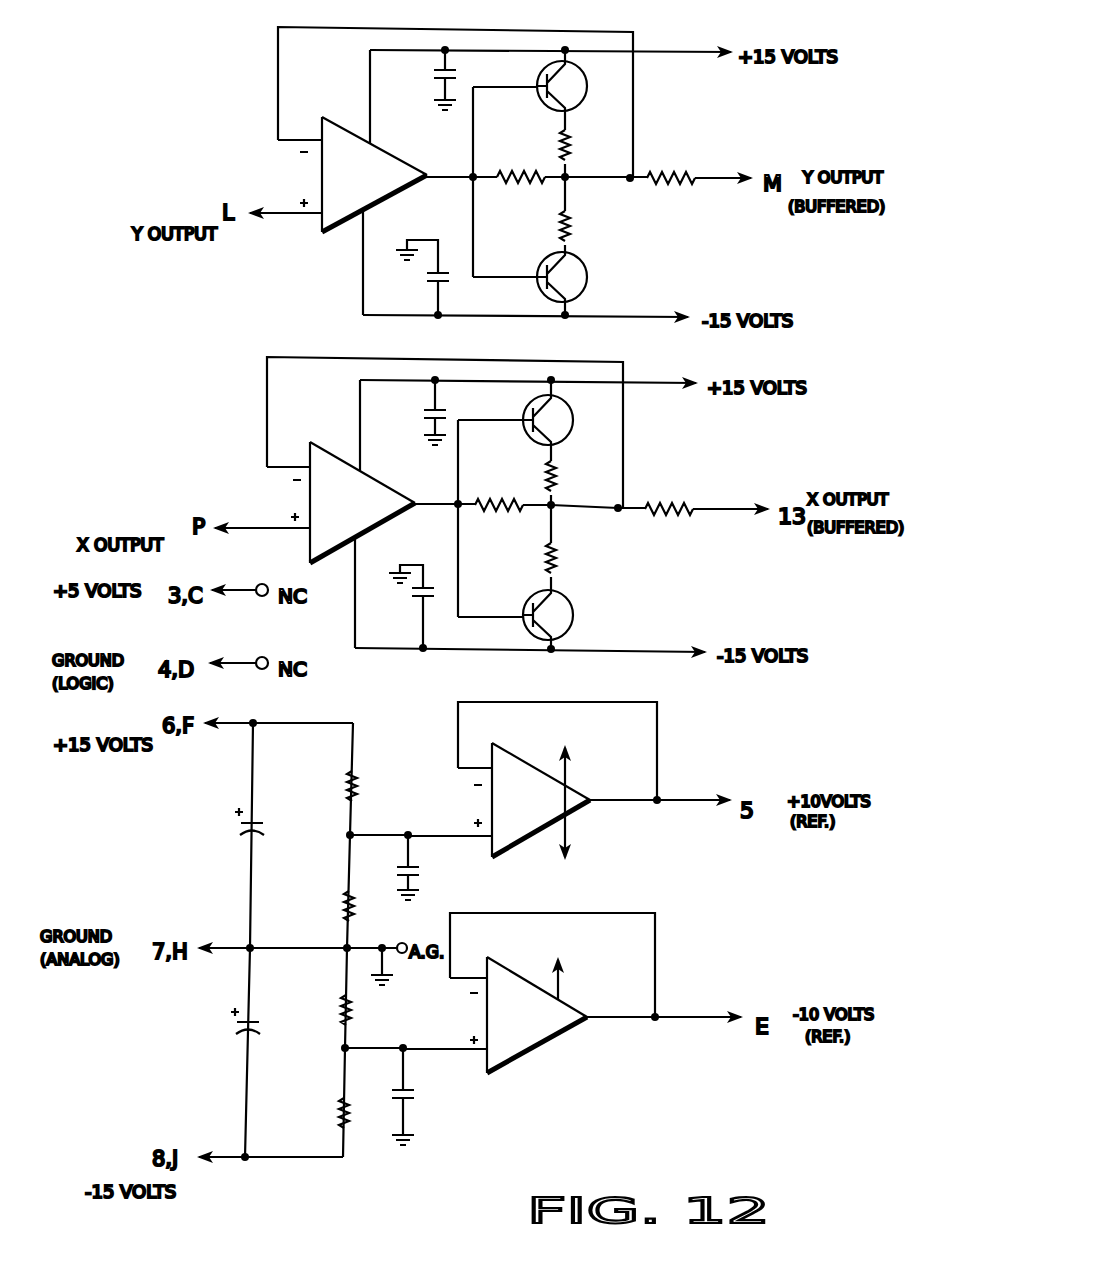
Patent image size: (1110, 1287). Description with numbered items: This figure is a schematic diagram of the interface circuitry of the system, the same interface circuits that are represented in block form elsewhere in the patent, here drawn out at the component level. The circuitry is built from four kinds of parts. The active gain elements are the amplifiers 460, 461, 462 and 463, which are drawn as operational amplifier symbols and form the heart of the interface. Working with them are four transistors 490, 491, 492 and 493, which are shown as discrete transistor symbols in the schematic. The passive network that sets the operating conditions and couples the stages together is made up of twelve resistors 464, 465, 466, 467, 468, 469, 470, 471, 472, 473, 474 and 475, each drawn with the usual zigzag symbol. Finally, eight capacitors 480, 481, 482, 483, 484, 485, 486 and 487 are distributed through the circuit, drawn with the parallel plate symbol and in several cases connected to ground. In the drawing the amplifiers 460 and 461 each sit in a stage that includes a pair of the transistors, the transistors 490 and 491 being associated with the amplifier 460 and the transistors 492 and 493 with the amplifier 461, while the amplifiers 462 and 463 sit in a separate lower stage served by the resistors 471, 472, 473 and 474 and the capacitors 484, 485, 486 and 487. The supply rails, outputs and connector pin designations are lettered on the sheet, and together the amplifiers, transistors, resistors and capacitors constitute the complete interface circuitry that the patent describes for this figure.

The amplifier 460 is at (383, 149).
The amplifier 461 is at (428, 470).
The amplifier 462 is at (570, 790).
The amplifier 463 is at (568, 1001).
The resistor 464 is at (530, 190).
The resistor 465 is at (575, 222).
The resistor 466 is at (653, 171).
The resistor 467 is at (653, 498).
The resistor 468 is at (558, 483).
The resistor 469 is at (522, 482).
The resistor 470 is at (561, 563).
The resistor 471 is at (385, 768).
The resistor 472 is at (338, 913).
The resistor 473 is at (330, 1018).
The resistor 474 is at (330, 1115).
The resistor 475 is at (555, 145).
The capacitor 480 is at (425, 82).
The capacitor 481 is at (425, 278).
The capacitor 482 is at (415, 418).
The capacitor 483 is at (405, 605).
The capacitor 484 is at (423, 870).
The capacitor 485 is at (418, 1095).
The capacitor 486 is at (247, 836).
The capacitor 487 is at (240, 1036).
The transistor 490 is at (580, 108).
The transistor 491 is at (588, 280).
The transistor 492 is at (526, 412).
The transistor 493 is at (574, 622).